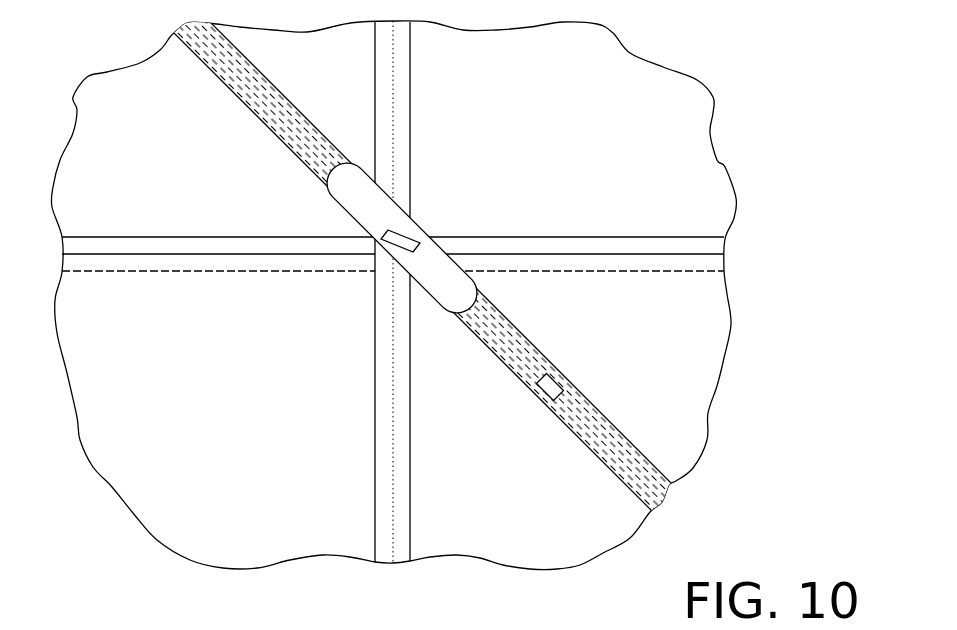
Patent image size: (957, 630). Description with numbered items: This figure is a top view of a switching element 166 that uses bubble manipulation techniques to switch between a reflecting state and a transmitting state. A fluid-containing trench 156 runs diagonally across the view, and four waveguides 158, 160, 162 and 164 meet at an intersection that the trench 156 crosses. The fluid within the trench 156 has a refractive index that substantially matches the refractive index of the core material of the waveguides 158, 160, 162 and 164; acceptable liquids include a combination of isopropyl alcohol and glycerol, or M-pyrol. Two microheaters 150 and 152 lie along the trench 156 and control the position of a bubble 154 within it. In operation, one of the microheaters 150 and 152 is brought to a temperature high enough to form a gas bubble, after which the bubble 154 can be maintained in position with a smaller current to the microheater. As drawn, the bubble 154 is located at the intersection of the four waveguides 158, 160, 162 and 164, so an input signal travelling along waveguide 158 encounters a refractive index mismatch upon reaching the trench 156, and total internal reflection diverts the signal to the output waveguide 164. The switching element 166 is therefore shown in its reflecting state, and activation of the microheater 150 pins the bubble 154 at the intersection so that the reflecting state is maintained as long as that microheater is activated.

The microheater 150 is at (405, 241).
The microheater 152 is at (553, 373).
The bubble 154 is at (362, 200).
The fluid-containing trench 156 is at (232, 85).
The waveguide 158 is at (153, 238).
The waveguide 160 is at (611, 242).
The waveguide 162 is at (405, 78).
The output waveguide 164 is at (375, 428).
The switching element 166 is at (775, 113).